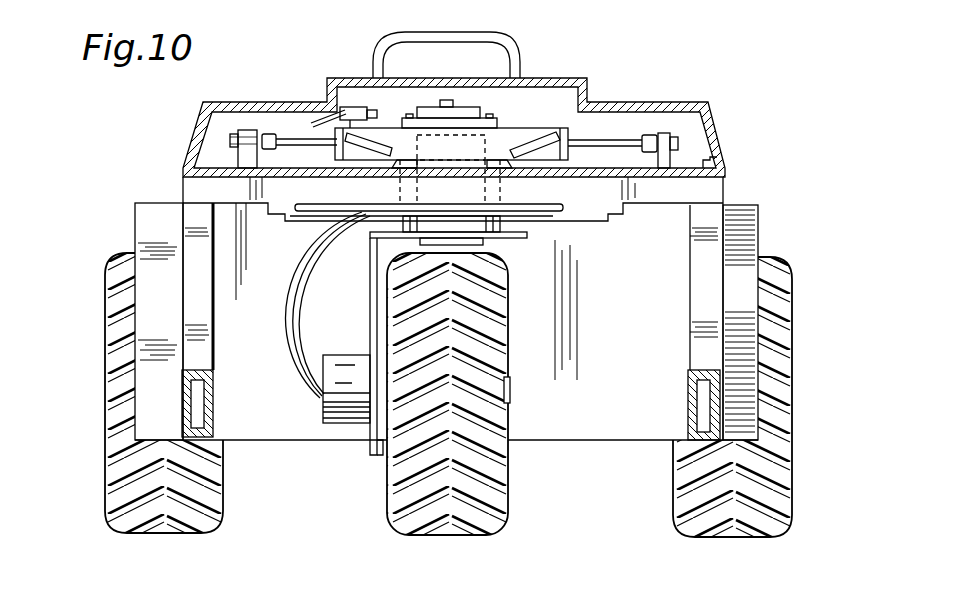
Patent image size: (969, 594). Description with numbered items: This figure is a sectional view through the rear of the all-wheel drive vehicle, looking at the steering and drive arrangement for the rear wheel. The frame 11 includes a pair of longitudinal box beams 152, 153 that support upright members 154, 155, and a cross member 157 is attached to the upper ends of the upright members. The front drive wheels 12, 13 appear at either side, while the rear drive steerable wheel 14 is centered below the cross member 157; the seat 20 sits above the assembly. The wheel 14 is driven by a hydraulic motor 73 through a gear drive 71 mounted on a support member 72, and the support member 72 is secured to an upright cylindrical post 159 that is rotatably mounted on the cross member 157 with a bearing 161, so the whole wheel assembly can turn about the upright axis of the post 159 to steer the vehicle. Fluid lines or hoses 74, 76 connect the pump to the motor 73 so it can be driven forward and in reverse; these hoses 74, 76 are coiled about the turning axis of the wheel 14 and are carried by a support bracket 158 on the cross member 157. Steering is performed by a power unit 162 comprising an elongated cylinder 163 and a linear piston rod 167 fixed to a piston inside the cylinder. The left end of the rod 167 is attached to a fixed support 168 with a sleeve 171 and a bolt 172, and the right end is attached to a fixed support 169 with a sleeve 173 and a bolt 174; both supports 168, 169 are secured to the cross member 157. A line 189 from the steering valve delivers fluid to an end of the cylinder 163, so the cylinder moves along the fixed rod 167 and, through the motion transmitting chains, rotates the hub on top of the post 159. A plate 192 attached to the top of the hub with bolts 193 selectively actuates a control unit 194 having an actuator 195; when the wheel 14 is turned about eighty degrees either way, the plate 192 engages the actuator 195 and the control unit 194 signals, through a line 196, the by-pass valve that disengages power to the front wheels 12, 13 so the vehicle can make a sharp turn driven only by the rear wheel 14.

The frame 11 is at (183, 196).
The front drive wheel 12 is at (792, 316).
The front drive wheel 13 is at (105, 300).
The rear drive steerable wheel 14 is at (490, 478).
The seat 20 is at (453, 32).
The gear drive 71 is at (380, 447).
The support member 72 is at (368, 439).
The hydraulic motor 73 is at (333, 355).
The first line 74 is at (302, 306).
The second line 76 is at (295, 279).
The longitudinal box beam 152 is at (213, 414).
The longitudinal box beam 153 is at (688, 399).
The upright member 154 is at (203, 344).
The upright member 155 is at (707, 296).
The cross member 157 is at (237, 190).
The support bracket 158 is at (583, 222).
The post 159 is at (466, 192).
The bearing 161 is at (400, 192).
The power unit 162 is at (543, 104).
The cylinder 163 is at (508, 137).
The piston rod 167 is at (591, 143).
The fixed support 168 is at (247, 130).
The fixed support 169 is at (666, 133).
The sleeve 171 is at (268, 142).
The bolt 172 is at (230, 142).
The sleeve 173 is at (642, 144).
The bolt 174 is at (679, 143).
The line 189 is at (534, 148).
The plate 192 is at (431, 107).
The bolt 193 is at (448, 100).
The control unit 194 is at (349, 107).
The actuator 195 is at (388, 113).
The line 196 is at (316, 123).